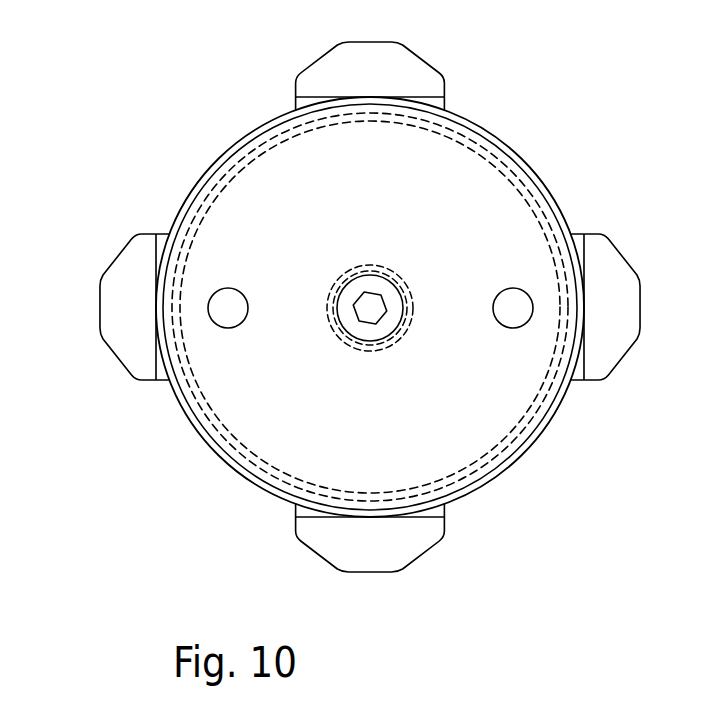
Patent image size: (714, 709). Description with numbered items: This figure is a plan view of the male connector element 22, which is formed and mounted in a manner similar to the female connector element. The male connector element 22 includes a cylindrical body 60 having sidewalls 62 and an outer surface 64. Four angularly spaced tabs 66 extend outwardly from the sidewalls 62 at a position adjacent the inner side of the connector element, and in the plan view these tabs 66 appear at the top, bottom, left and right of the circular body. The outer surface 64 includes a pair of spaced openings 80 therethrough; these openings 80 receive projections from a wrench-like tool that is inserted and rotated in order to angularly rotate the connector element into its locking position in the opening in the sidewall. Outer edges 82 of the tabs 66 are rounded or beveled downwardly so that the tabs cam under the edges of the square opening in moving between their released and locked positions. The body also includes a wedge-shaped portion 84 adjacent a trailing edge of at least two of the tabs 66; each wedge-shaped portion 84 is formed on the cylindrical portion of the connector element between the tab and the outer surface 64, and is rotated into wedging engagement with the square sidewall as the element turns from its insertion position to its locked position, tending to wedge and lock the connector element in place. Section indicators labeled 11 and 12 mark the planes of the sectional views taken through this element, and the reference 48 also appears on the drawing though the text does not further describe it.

The section line 11- 11 is at (58, 358).
The section line 12- 12 is at (427, 35).
The male connector element 22 is at (209, 491).
The aperture 48 is at (228, 328).
The cylindrical body 60 is at (486, 499).
The sidewalls 62 is at (460, 500).
The outer surface 64 is at (267, 391).
The tabs 66 is at (612, 342).
The openings 80 is at (513, 328).
The outer edges 82 is at (127, 342).
The wedge-shaped portion 84 is at (430, 99).